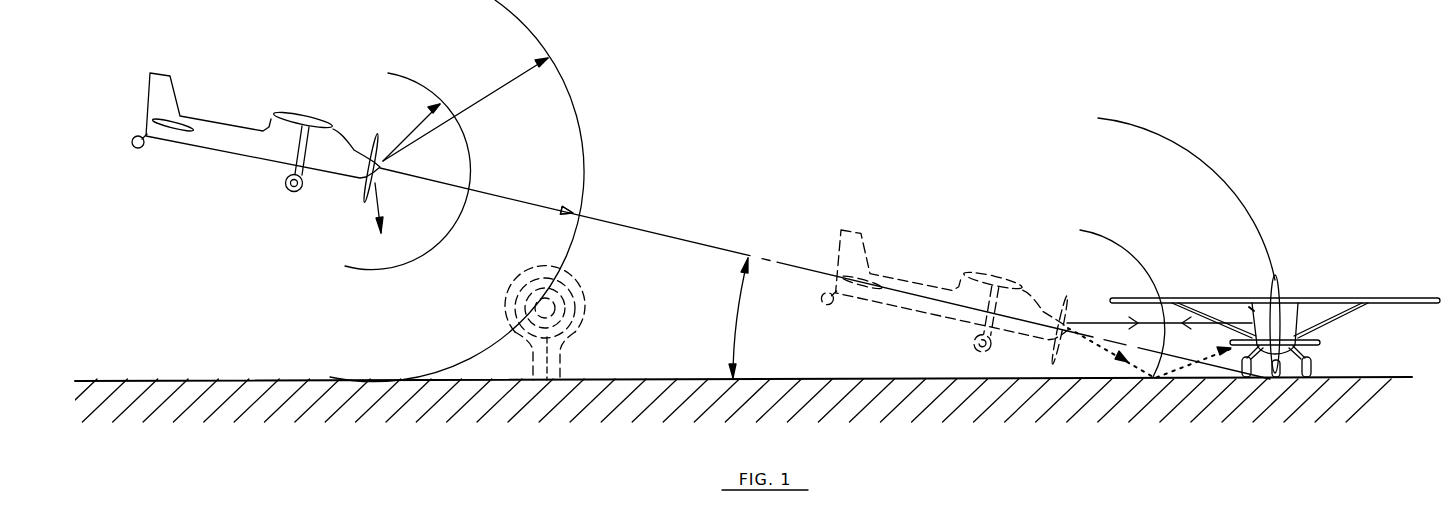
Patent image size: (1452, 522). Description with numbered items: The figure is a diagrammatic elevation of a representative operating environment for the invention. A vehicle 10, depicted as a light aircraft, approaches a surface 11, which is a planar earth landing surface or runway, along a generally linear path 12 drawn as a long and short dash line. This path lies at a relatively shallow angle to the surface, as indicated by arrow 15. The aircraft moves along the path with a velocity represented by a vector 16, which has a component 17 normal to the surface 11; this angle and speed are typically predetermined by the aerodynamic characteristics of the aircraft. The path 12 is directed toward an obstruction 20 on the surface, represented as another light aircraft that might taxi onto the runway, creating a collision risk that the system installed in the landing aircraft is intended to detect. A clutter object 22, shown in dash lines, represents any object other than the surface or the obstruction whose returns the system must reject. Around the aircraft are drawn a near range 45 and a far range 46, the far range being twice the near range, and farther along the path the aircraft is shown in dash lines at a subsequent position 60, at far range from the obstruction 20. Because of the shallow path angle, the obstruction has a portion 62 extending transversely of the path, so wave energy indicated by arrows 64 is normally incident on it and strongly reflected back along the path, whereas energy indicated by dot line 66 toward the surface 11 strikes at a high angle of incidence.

The vehicle 10 is at (323, 120).
The surface 11 is at (286, 380).
The path 12 is at (673, 239).
The arrow 15 is at (737, 324).
The vector 16 is at (528, 208).
The component 17 is at (378, 202).
The obstruction 20 is at (1383, 300).
The clutter object 22 is at (587, 303).
The near range 45 is at (426, 120).
The far range 46 is at (524, 68).
The subsequent position 60 is at (1013, 273).
The portion 62 is at (1250, 311).
The arrows 64 is at (1160, 300).
The dot line 66 is at (1131, 364).